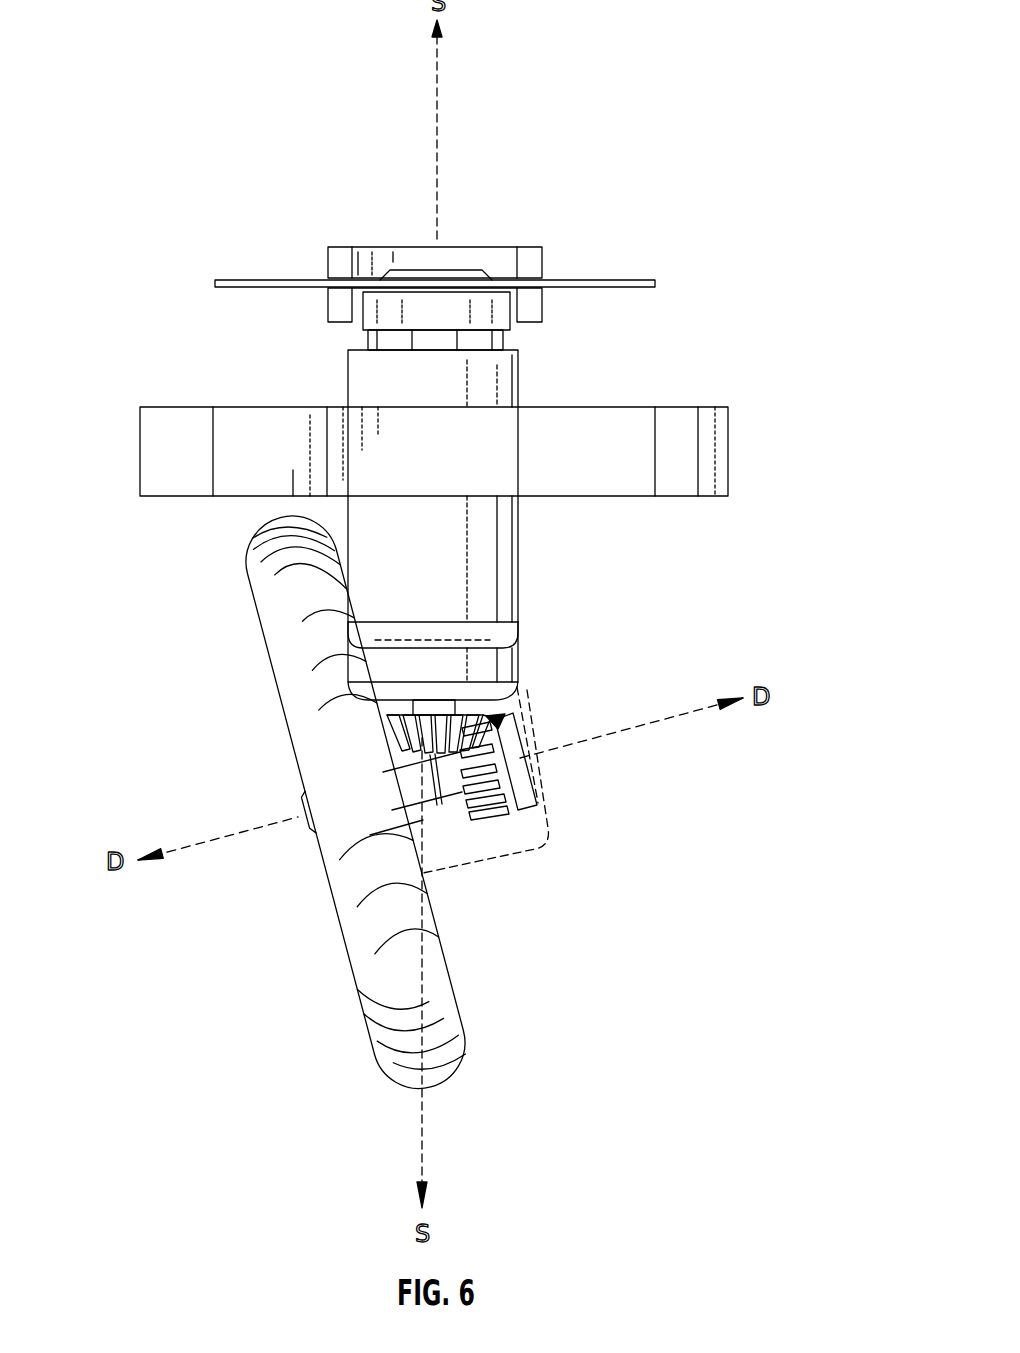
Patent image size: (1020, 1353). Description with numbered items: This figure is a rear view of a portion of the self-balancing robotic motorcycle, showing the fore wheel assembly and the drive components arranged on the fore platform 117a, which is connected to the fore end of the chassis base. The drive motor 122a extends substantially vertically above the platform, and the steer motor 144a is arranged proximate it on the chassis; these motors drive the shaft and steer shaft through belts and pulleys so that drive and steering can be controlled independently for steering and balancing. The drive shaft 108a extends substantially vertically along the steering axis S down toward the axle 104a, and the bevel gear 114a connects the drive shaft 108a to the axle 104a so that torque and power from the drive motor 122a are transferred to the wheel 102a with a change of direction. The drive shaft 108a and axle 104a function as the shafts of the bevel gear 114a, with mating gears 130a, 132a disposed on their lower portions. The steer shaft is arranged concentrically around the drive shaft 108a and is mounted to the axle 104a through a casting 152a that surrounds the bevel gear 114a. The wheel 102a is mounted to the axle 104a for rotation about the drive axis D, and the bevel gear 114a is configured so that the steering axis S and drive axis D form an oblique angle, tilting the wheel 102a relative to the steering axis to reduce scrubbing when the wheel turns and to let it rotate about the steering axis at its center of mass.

The wheel 102a is at (268, 595).
The axle 104a is at (428, 800).
The drive shaft 108a is at (443, 708).
The bevel gear 114a is at (495, 718).
The fore platform 117a is at (699, 407).
The drive motor 122a is at (503, 560).
The mating gear 130a is at (387, 739).
The mating gear 132a is at (510, 792).
The steer motor 144a is at (503, 672).
The casting 152a is at (530, 848).